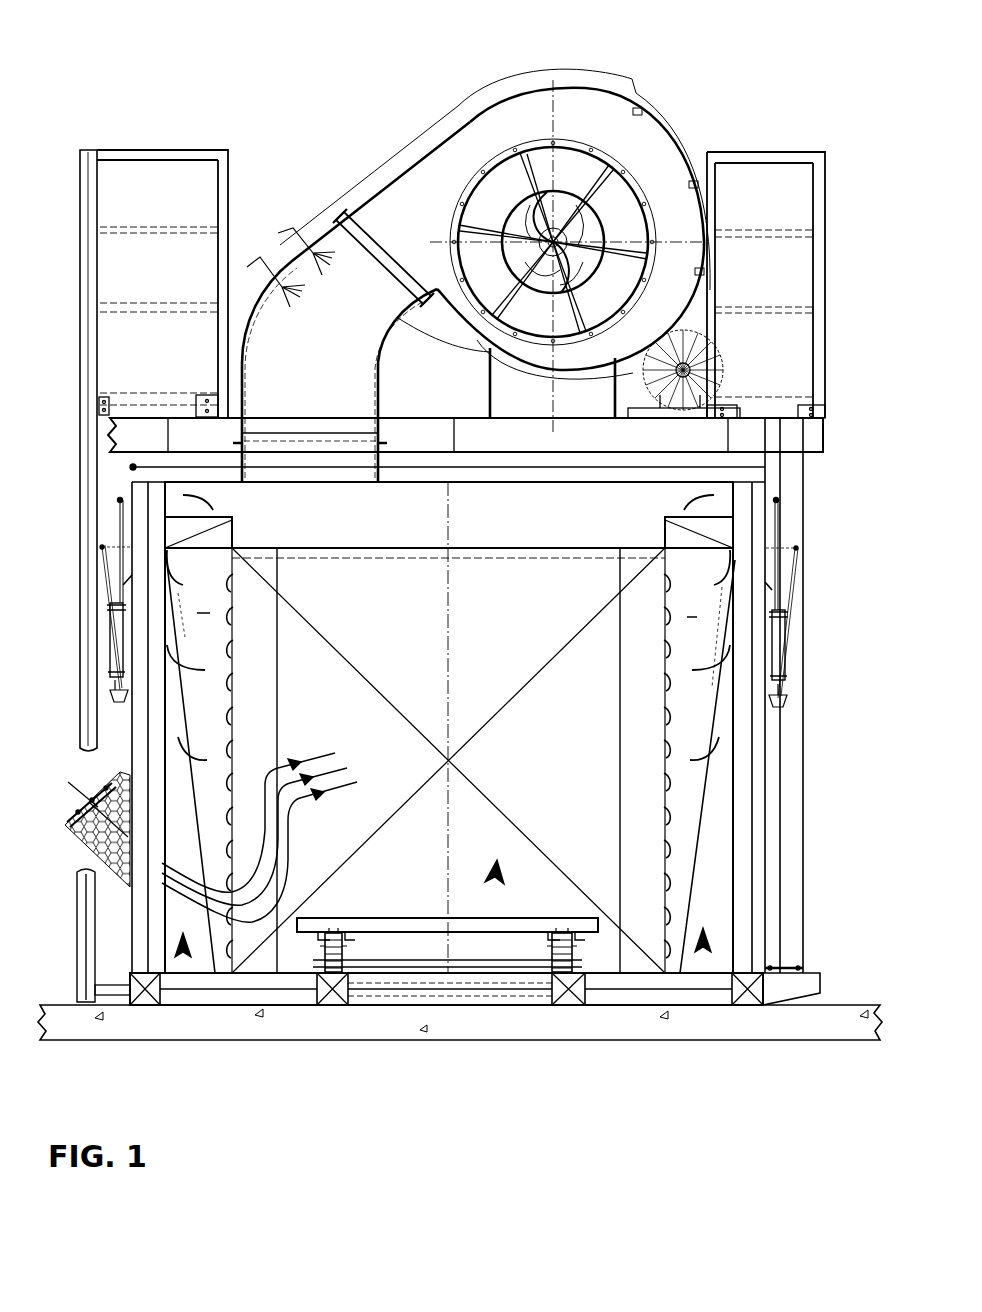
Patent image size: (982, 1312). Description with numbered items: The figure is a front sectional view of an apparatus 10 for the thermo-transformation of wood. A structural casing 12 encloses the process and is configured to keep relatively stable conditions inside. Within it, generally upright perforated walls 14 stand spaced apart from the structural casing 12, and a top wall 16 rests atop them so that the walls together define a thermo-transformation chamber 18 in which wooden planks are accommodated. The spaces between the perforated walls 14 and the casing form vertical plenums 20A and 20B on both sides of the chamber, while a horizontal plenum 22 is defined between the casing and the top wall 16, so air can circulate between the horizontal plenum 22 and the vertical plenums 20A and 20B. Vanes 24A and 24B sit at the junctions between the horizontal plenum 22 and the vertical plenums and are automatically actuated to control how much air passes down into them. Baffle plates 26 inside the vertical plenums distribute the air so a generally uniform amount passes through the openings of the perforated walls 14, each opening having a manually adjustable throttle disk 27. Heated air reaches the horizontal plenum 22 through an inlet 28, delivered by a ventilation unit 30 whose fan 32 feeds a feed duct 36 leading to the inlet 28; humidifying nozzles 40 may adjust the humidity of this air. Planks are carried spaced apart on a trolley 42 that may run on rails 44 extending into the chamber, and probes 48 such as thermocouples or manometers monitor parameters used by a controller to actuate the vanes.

The apparatus 10 is at (860, 368).
The structural casing 12 is at (803, 868).
The perforated walls 14 is at (243, 937).
The top wall 16 is at (395, 548).
The thermo-transformation chamber 18 is at (497, 878).
The vertical plenum 20A is at (183, 955).
The vertical plenum 20B is at (703, 950).
The horizontal plenum 22 is at (502, 530).
The vane 24A is at (213, 510).
The vane 24B is at (705, 535).
The baffle plates 26 is at (207, 613).
The throttle disks 27 is at (225, 848).
The inlet 28 is at (385, 482).
The ventilation unit 30 is at (350, 135).
The fan 32 is at (512, 150).
The feed duct 36 is at (382, 362).
The humidifying nozzles 40 is at (302, 242).
The trolley 42 is at (358, 968).
The rails 44 is at (580, 975).
The probes 48 is at (297, 758).